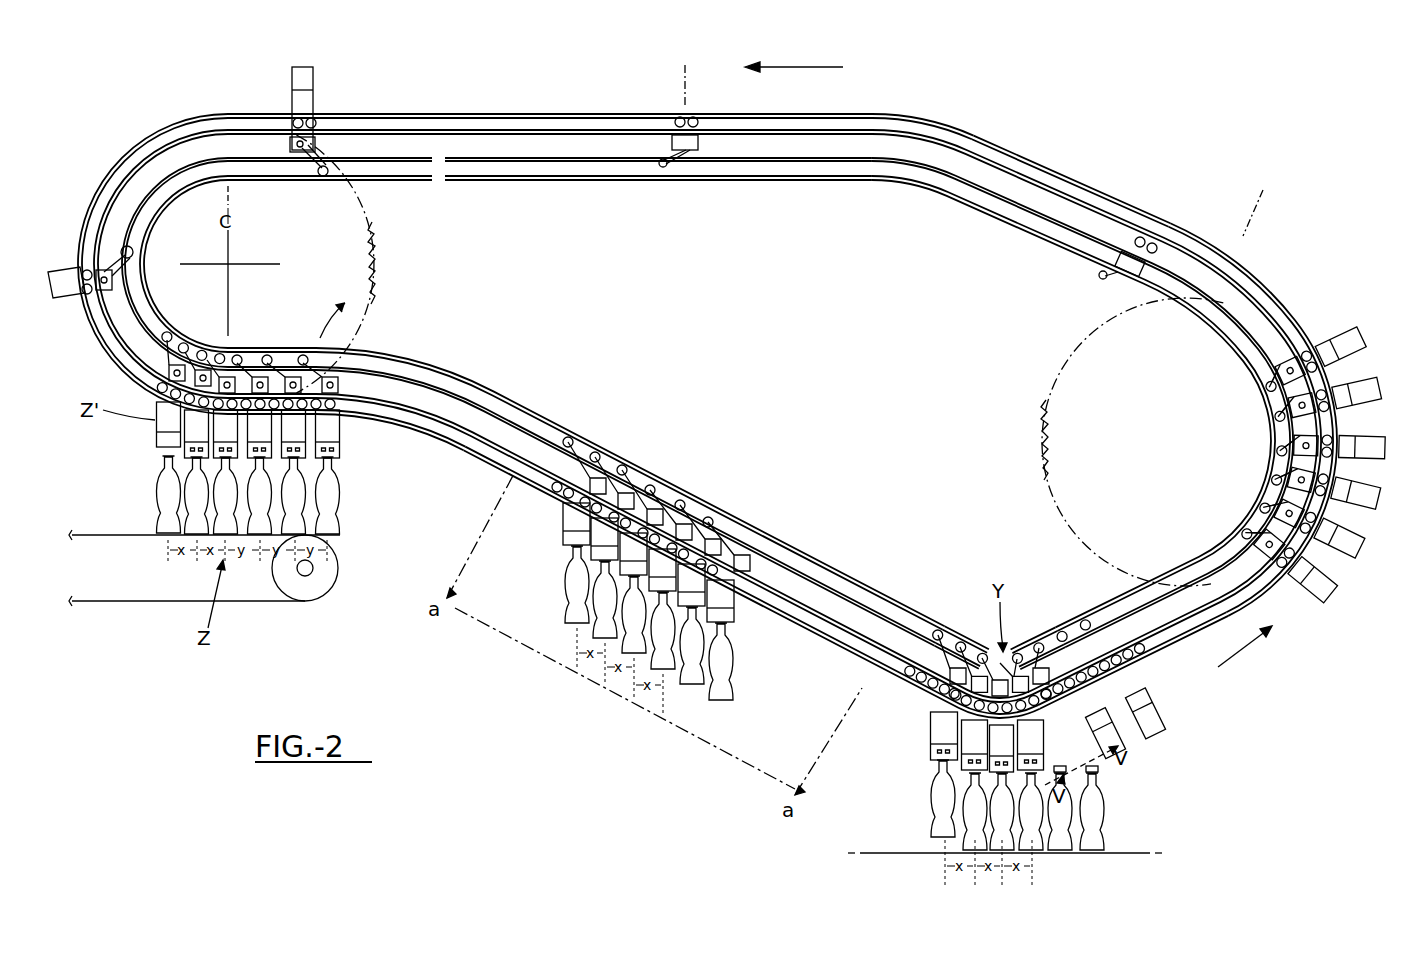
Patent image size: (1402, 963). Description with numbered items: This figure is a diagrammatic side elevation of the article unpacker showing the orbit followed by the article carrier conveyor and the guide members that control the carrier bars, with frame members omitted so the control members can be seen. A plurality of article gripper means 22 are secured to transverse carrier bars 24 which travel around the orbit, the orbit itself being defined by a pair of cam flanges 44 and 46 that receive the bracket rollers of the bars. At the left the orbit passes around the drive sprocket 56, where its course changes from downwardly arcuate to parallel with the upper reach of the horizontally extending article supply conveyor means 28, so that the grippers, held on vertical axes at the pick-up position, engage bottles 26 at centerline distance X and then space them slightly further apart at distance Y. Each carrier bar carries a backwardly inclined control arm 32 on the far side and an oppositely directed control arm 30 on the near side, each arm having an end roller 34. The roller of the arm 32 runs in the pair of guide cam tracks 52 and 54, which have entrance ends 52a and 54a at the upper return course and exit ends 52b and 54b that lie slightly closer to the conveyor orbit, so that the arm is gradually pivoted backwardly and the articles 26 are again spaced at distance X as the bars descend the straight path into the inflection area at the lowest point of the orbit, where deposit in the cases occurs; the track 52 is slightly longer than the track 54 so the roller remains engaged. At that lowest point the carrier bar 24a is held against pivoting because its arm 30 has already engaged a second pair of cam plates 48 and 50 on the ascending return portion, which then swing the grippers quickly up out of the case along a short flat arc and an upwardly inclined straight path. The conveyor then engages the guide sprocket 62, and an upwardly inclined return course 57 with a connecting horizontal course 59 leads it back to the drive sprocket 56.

The article gripper means 22 is at (348, 432).
The carrier bar 24 is at (694, 150).
The lowermost carrier bar 24a is at (968, 713).
The bottles 26 is at (343, 500).
The article supply conveyor means 28 is at (132, 600).
The control arm 30 is at (666, 158).
The control arm 32 is at (318, 150).
The end guide roller 34 is at (568, 440).
The cam flange 44 is at (498, 437).
The cam flange 46 is at (488, 458).
The cam plate 48 is at (1120, 605).
The cam plate 50 is at (1150, 686).
The guide cam track 52 is at (822, 590).
The entrance end of track 52 52a is at (432, 156).
The exit end of track 52 52b is at (1010, 676).
The guide cam track 54 is at (800, 566).
The entrance end of track 54 54a is at (440, 180).
The exit end of track 54 54b is at (990, 658).
The drive sprocket 56 is at (378, 270).
The upwardly inclined return course 57 is at (1106, 188).
The horizontal course 59 is at (832, 113).
The guide sprocket 62 is at (1042, 412).